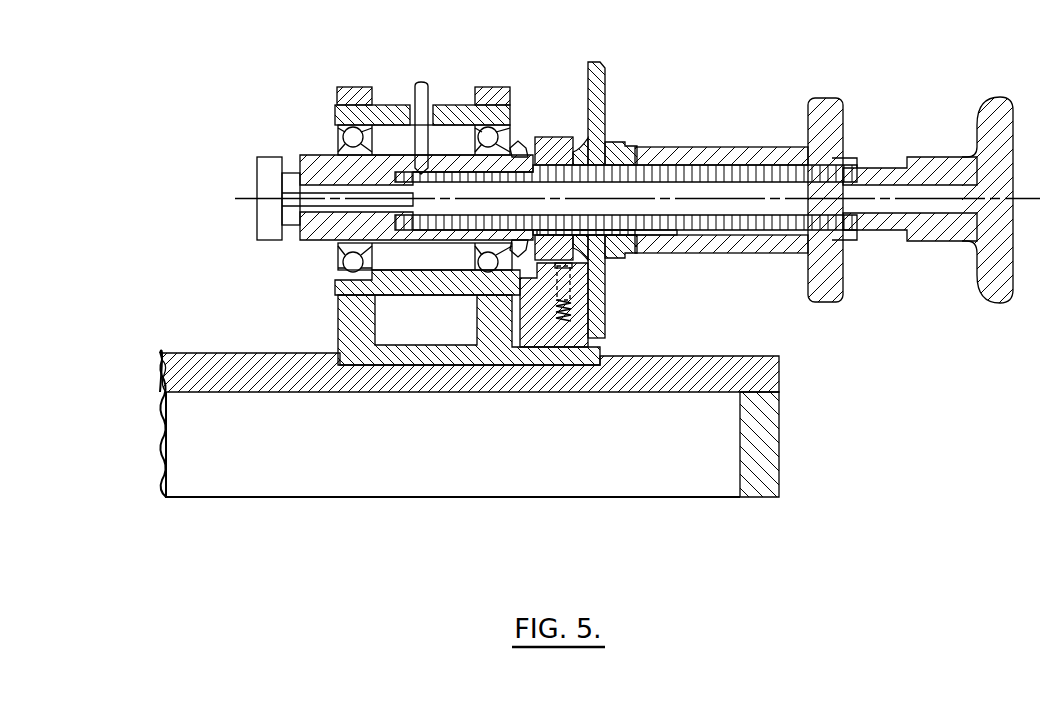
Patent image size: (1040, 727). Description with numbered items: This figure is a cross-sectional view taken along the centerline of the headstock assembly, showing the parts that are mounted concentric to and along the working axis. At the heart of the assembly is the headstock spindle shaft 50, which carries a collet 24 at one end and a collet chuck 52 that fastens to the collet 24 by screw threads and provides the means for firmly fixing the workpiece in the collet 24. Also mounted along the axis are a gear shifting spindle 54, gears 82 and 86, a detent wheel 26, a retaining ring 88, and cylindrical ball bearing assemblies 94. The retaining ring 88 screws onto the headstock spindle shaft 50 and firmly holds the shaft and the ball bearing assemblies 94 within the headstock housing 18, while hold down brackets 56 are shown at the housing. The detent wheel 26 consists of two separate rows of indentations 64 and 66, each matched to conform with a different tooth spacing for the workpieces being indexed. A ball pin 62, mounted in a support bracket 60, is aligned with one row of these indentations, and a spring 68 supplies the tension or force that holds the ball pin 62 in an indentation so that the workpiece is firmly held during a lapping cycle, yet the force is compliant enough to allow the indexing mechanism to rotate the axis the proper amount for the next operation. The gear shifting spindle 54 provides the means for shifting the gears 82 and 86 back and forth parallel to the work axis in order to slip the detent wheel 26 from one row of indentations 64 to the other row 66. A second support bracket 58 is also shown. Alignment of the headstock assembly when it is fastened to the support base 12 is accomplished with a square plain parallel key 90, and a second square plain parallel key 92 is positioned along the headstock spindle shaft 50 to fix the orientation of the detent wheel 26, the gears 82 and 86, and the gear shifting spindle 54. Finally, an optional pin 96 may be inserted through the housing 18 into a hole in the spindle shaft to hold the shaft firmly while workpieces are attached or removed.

The support base 12 is at (784, 386).
The headstock housing 18 is at (405, 105).
The collet 24 is at (257, 165).
The detent wheel 26 is at (585, 143).
The headstock spindle shaft 50 is at (315, 155).
The collet chuck 52 is at (992, 108).
The gear shifting spindle 54 is at (838, 98).
The hold down brackets 56 is at (358, 87).
The support bracket 58 is at (338, 325).
The support bracket 60 is at (578, 302).
The ball pin 62 is at (572, 278).
The row of indentations 64 is at (548, 137).
The row of indentations 66 is at (568, 137).
The spring 68 is at (571, 317).
The gear 82 is at (625, 142).
The gear 86 is at (594, 62).
The retaining ring 88 is at (518, 140).
The square plain parallel key 90 is at (600, 347).
The second square plain parallel key 92 is at (667, 237).
The cylindrical ball bearing assemblies 94 is at (343, 133).
The pin 96 is at (425, 84).